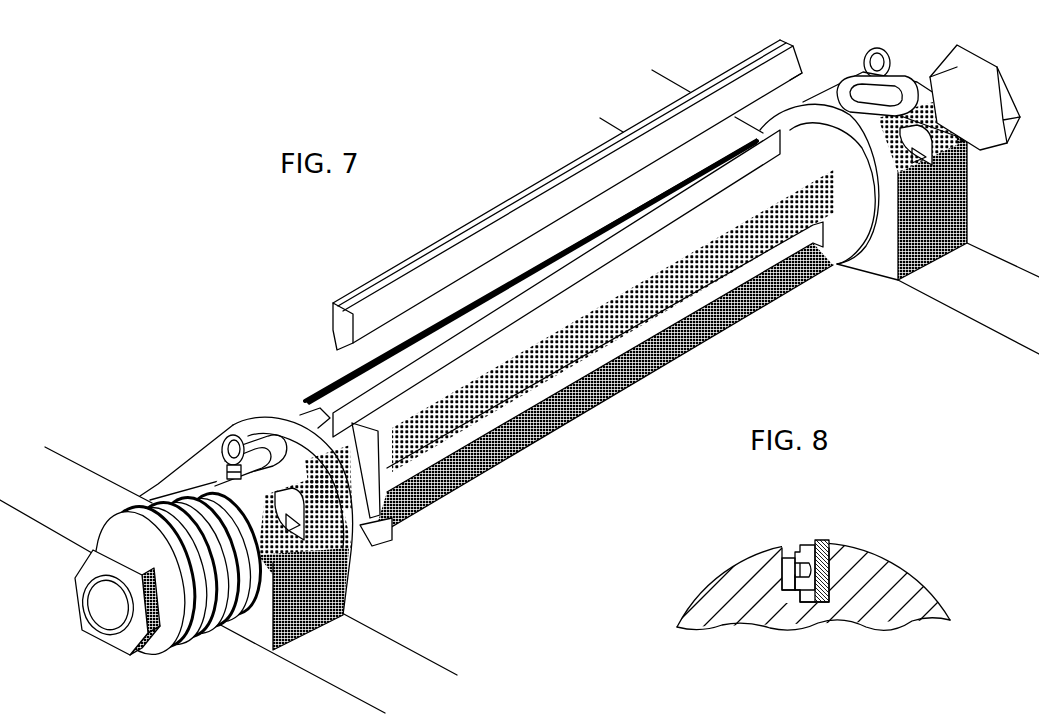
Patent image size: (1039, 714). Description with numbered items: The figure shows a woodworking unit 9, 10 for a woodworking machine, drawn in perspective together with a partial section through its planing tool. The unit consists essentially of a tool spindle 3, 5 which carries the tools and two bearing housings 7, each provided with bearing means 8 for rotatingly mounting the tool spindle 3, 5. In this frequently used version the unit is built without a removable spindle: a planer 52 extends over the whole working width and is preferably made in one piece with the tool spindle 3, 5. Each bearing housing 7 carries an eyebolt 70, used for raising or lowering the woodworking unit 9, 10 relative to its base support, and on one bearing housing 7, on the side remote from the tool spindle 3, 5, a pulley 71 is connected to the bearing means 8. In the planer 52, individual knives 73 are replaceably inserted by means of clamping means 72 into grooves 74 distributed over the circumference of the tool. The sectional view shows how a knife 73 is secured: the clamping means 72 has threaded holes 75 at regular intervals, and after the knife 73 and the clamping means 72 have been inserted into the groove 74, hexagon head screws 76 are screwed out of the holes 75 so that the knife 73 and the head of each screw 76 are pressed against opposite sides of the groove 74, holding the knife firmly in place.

In FIG. 7, the tool spindle 3 is at (303, 425).
In FIG. 7, the tool spindle 5 is at (315, 418).
In FIG. 7, the bearing housing 7 is at (190, 470).
In FIG. 7, the bearing means 8 is at (825, 72).
In FIG. 7, the woodworking unit 9 is at (596, 411).
In FIG. 7, the woodworking unit 10 is at (587, 384).
In FIG. 7, the planer 52 is at (322, 394).
In FIG. 7, the eyebolt 70 is at (231, 436).
In FIG. 7, the pulley 71 is at (115, 527).
In FIG. 7, the clamping means 72 is at (372, 280).
In FIG. 8, the clamping means 72 is at (799, 546).
In FIG. 7, the knife 73 is at (530, 200).
In FIG. 8, the knife 73 is at (824, 546).
In FIG. 7, the groove 74 is at (477, 340).
In FIG. 8, the groove 74 is at (807, 598).
In FIG. 8, the threaded hole 75 is at (806, 594).
In FIG. 8, the hexagon head screw 76 is at (787, 556).